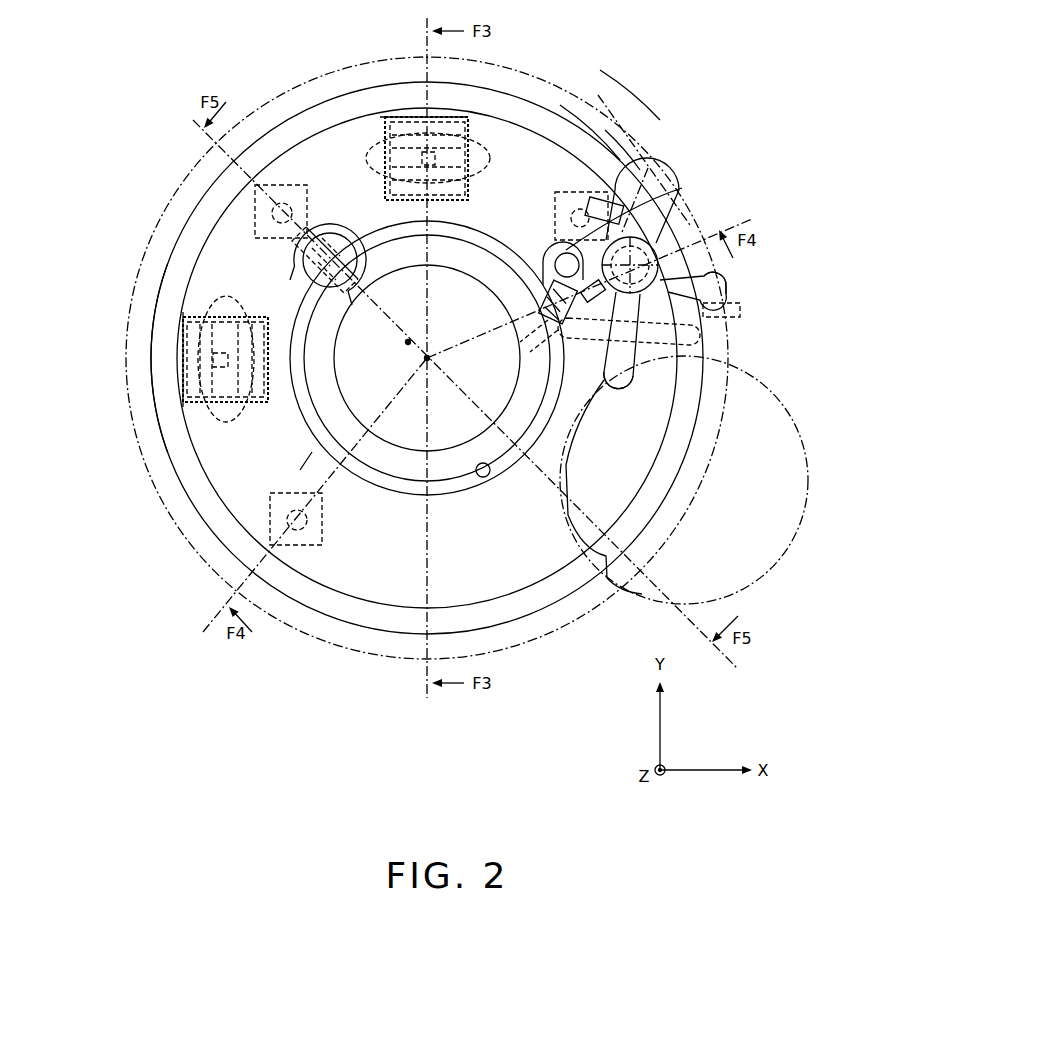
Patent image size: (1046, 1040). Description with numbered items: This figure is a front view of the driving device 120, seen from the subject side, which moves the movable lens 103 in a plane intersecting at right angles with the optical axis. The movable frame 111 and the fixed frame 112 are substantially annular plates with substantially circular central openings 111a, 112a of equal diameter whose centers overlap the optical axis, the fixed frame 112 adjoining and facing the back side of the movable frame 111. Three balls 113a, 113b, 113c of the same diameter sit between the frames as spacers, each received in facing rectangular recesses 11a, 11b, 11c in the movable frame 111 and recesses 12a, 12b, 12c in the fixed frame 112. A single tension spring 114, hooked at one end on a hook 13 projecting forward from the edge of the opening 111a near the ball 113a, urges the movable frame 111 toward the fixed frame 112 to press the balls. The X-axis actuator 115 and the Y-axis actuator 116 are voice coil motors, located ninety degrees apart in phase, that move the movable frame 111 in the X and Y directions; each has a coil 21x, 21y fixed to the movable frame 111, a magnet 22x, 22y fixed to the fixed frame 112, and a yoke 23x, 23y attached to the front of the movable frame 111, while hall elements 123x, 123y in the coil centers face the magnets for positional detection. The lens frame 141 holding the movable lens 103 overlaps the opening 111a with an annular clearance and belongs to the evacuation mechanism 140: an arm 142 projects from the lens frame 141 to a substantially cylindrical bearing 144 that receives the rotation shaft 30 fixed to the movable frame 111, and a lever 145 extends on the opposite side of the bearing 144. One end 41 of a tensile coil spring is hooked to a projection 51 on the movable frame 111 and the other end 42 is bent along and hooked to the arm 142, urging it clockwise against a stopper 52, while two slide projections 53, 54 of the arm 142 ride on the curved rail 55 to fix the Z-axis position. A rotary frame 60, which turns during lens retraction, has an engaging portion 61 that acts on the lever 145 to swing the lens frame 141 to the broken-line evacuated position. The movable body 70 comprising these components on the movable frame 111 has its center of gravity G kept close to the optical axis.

The hook 13 is at (340, 292).
The rotation shaft 30 is at (678, 230).
The one end of the tensile coil spring 41 is at (640, 160).
The other end of the tensile coil spring 42 is at (603, 340).
The projection 51 is at (672, 194).
The stopper 52 is at (552, 259).
The slide projection 53 is at (540, 298).
The slide projection 54 is at (514, 345).
The curved rail 55 is at (625, 378).
The rotary frame 60 is at (561, 630).
The engaging portion 61 is at (742, 309).
The movable body 70 is at (392, 622).
The movable lens 103 is at (398, 470).
The movable frame 111 is at (565, 122).
The fixed frame 112 is at (615, 140).
The tension spring 114 is at (338, 238).
The X-axis actuator 115 is at (172, 292).
The Y-axis actuator 116 is at (518, 110).
The driving device 120 is at (630, 100).
The evacuation mechanism 140 is at (688, 160).
The lens frame 141 is at (302, 420).
The arm 142 is at (600, 386).
The bearing 144 is at (712, 340).
The lever 145 is at (730, 281).
The ball 113a is at (272, 220).
The ball 113b is at (544, 204).
The ball 113c is at (339, 509).
The recess 11a is at (257, 244).
The recess 12a is at (292, 242).
The recess 11b is at (527, 215).
The recess 12b is at (562, 200).
The recess 11c is at (350, 535).
The recess 12c is at (322, 528).
The opening 111a is at (416, 491).
The opening 112a is at (482, 478).
The coil 21x is at (213, 420).
The magnet 22x is at (190, 400).
The yoke 23x is at (183, 338).
The hall element 123x is at (200, 375).
The coil 21y is at (490, 167).
The magnet 22y is at (410, 114).
The yoke 23y is at (455, 112).
The hall element 123y is at (372, 130).